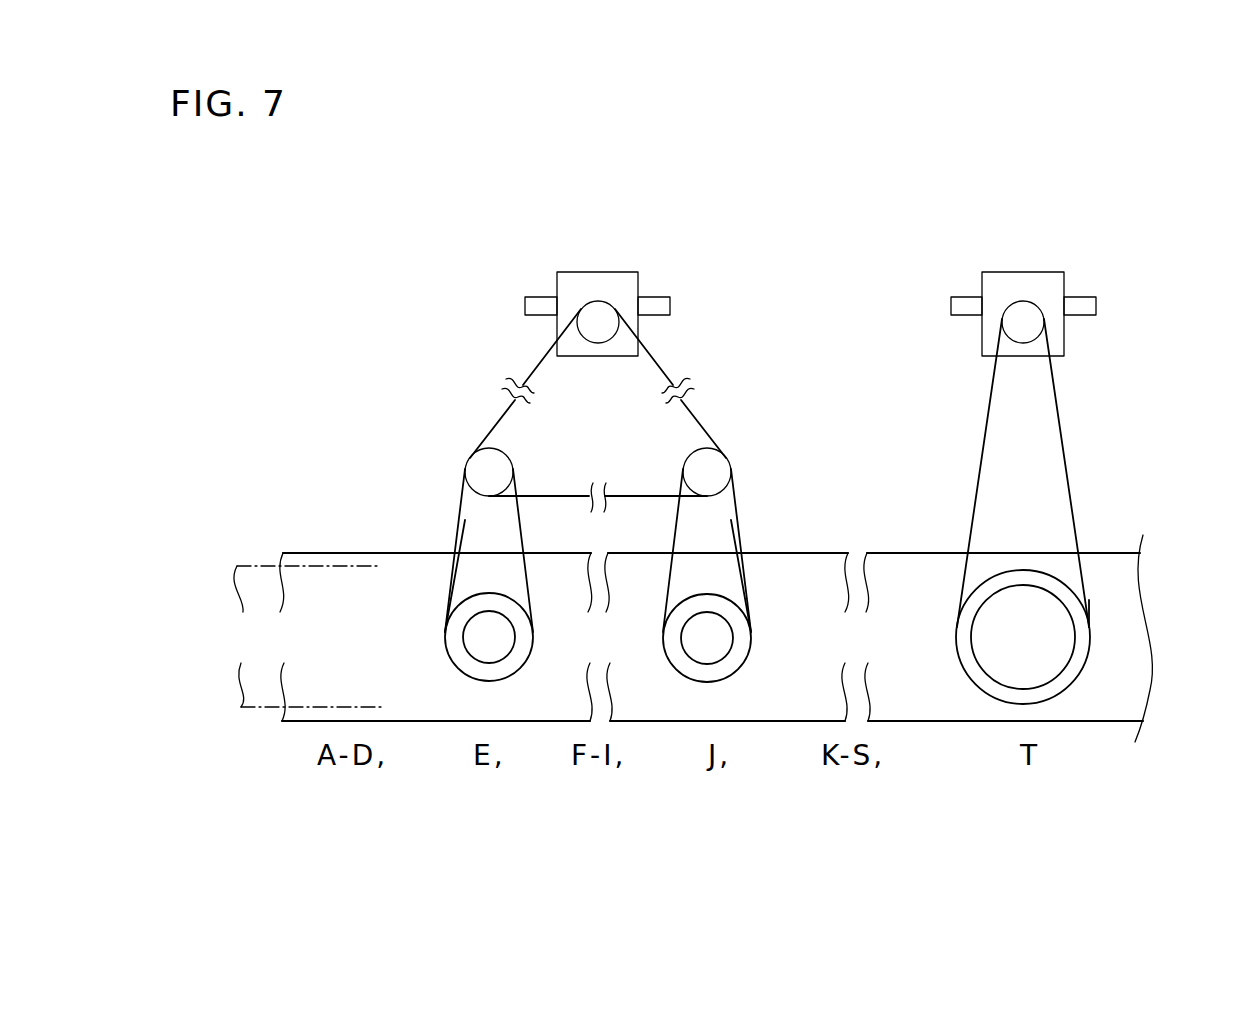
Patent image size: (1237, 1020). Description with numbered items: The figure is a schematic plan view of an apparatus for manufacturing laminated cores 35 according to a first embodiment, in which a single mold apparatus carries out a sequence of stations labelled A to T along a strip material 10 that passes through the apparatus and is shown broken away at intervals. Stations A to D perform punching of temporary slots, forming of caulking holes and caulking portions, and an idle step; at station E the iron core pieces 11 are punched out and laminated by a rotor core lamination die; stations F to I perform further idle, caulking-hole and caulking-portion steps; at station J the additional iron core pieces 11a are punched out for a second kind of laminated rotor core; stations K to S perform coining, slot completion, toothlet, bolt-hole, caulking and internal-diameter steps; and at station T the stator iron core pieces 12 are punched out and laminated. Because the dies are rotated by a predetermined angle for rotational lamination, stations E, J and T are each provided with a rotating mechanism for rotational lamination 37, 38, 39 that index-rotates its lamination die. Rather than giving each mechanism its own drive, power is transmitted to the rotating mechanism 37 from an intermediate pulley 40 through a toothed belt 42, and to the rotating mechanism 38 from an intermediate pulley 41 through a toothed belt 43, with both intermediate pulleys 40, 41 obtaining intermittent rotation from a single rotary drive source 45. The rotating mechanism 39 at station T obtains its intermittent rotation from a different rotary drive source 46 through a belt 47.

The strip material 10 is at (262, 580).
The iron core pieces 11 is at (481, 637).
The additional iron core pieces 11a is at (713, 638).
The iron core pieces 12 is at (1057, 677).
The apparatus for manufacturing laminated cores 35 is at (1097, 543).
The rotating mechanism for rotational lamination 37 is at (463, 598).
The rotating mechanism for rotational lamination 38 is at (720, 598).
The rotating mechanism for rotational lamination 39 is at (1091, 654).
The intermediate pulley 40 is at (484, 470).
The intermediate pulley 41 is at (712, 467).
The belt 42 is at (457, 517).
The belt 43 is at (736, 501).
The rotary drive source 45 is at (598, 282).
The rotary drive source 46 is at (1023, 287).
The belt 47 is at (1060, 414).